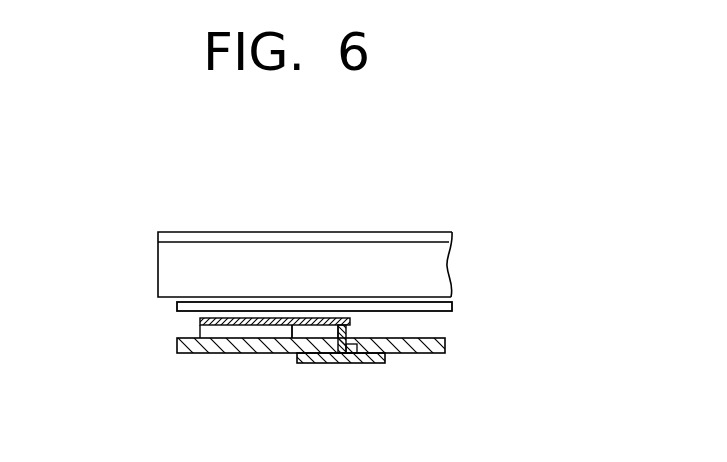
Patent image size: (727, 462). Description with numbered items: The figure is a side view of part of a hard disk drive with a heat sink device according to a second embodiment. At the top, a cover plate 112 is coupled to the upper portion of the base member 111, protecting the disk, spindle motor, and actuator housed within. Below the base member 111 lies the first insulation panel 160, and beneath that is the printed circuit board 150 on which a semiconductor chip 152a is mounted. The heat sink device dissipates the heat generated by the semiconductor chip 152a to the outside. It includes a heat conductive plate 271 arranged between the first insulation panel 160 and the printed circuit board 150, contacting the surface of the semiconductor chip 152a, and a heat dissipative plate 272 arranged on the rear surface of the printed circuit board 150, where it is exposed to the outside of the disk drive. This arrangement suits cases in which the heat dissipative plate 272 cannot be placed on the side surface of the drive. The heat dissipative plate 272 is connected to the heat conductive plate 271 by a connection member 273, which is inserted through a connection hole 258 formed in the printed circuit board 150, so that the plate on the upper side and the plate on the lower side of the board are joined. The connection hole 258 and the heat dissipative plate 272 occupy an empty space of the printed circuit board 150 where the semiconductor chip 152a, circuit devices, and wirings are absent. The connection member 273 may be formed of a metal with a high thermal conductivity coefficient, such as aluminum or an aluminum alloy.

The base member 111 is at (163, 268).
The cover plate 112 is at (158, 238).
The first insulation panel 160 is at (177, 305).
The printed circuit board 150 is at (177, 345).
The semiconductor chip 152a is at (212, 330).
The heat conductive plate 271 is at (277, 326).
The connection member 273 is at (342, 355).
The connection hole 258 is at (350, 352).
The heat dissipative plate 272 is at (386, 361).